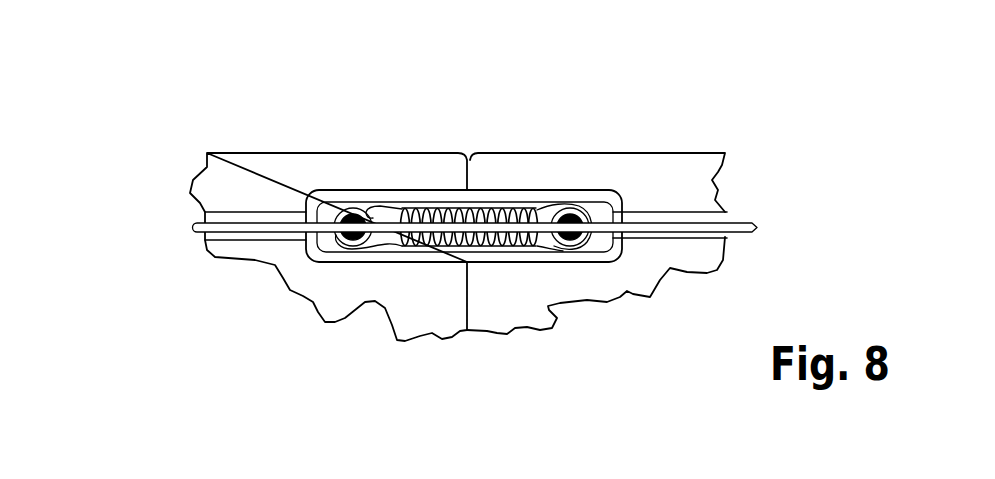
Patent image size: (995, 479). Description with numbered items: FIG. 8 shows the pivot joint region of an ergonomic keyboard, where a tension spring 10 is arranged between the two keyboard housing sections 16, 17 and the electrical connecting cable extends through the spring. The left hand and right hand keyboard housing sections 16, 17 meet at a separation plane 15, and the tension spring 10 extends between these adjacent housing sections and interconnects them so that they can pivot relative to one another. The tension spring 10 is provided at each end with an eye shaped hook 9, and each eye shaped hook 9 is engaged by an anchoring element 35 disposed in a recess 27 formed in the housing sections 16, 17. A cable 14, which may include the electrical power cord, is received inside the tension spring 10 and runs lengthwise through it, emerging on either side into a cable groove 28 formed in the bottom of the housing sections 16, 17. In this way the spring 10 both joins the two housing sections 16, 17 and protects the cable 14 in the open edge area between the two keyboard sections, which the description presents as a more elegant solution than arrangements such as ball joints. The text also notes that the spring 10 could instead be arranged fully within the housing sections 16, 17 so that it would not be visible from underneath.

The eye shaped hook 9 is at (354, 207).
The tension spring 10 is at (396, 250).
The cable 14 is at (757, 230).
The separation plane 15 is at (467, 190).
The keyboard housing section 16 is at (693, 163).
The keyboard housing section 17 is at (240, 155).
The recess 27 is at (323, 244).
The cable groove 28 is at (712, 216).
The anchoring element 35 is at (368, 213).